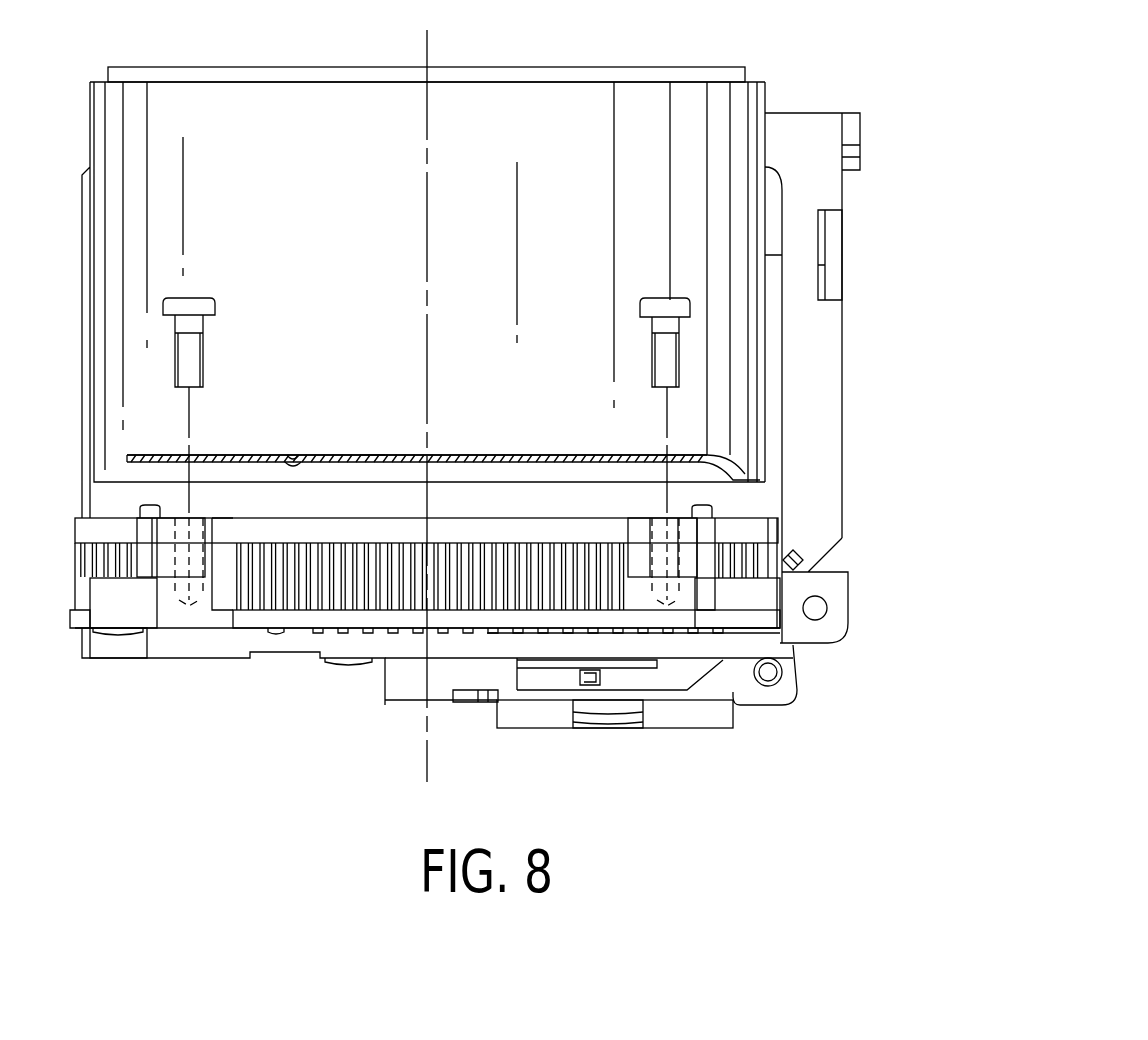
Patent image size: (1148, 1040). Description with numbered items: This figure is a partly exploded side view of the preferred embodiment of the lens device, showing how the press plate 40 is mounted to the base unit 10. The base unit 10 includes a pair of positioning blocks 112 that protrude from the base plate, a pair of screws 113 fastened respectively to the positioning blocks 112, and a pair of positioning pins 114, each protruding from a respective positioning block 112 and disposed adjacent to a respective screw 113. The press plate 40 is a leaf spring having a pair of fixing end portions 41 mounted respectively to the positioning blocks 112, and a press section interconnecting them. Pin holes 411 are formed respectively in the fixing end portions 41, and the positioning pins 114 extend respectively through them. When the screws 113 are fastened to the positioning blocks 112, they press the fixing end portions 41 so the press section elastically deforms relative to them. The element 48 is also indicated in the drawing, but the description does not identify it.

The base unit 10 is at (303, 615).
The fastening portion 48 is at (372, 462).
The press plate 40 is at (720, 458).
The fixing end portions 41 is at (733, 462).
The pin holes 411 is at (740, 478).
The positioning blocks 112 is at (692, 552).
The screws 113 is at (670, 300).
The positioning pins 114 is at (707, 503).